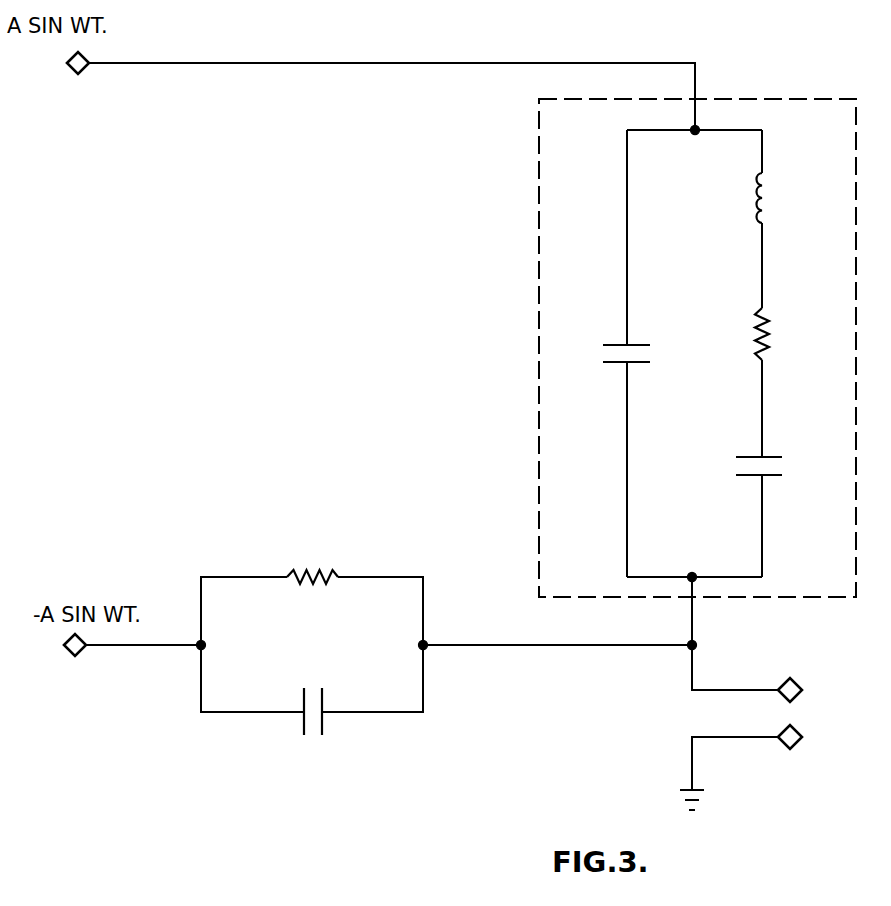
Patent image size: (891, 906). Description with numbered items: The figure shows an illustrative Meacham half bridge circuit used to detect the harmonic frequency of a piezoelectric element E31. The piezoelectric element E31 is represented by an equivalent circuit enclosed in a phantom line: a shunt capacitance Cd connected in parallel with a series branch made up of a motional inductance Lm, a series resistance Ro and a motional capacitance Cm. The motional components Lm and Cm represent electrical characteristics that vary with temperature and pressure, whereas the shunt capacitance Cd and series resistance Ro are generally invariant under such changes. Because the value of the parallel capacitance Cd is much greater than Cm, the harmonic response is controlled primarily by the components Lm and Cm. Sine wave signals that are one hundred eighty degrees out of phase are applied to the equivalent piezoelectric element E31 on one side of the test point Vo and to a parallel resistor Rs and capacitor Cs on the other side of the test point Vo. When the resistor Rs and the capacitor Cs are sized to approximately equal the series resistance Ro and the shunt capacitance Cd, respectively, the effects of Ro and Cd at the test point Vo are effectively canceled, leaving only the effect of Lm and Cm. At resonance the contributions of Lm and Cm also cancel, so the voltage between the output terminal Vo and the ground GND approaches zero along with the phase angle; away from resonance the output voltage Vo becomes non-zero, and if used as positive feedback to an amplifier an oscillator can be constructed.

The piezoelectric element E31 is at (697, 330).
The shunt capacitance Cd is at (604, 372).
The motional inductance Lm is at (765, 208).
The series resistance Ro is at (766, 320).
The motional capacitance Cm is at (772, 456).
The resistor Rs is at (299, 569).
The capacitor Cs is at (326, 684).
The test point Vo is at (798, 703).
The ground GND is at (729, 780).